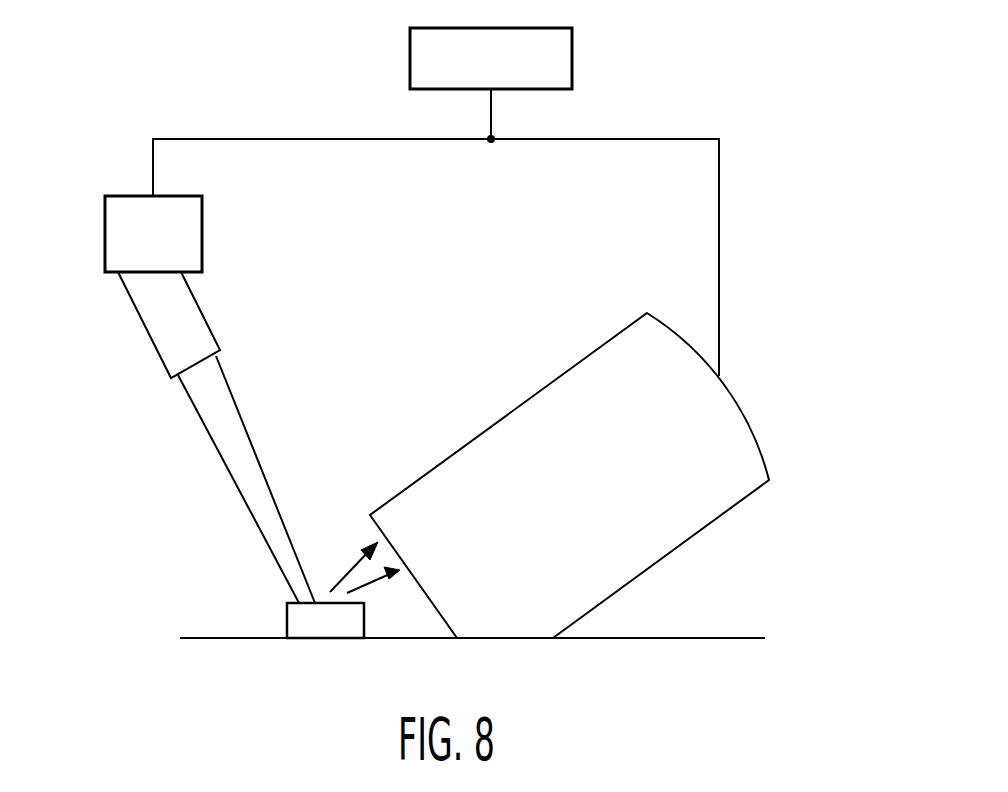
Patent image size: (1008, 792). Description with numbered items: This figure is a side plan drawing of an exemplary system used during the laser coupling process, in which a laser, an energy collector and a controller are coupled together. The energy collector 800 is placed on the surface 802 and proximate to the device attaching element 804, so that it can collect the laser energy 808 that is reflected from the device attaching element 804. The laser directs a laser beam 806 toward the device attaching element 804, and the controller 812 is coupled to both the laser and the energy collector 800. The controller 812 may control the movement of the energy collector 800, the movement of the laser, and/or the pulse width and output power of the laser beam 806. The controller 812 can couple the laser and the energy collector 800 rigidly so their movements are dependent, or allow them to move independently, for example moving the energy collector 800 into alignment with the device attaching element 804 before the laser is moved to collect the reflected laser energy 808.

The energy collector 800 is at (742, 441).
The surface 802 is at (682, 639).
The device attaching element 804 is at (315, 630).
The laser beam 806 is at (230, 415).
The laser energy 808 is at (348, 568).
The controller 812 is at (410, 58).